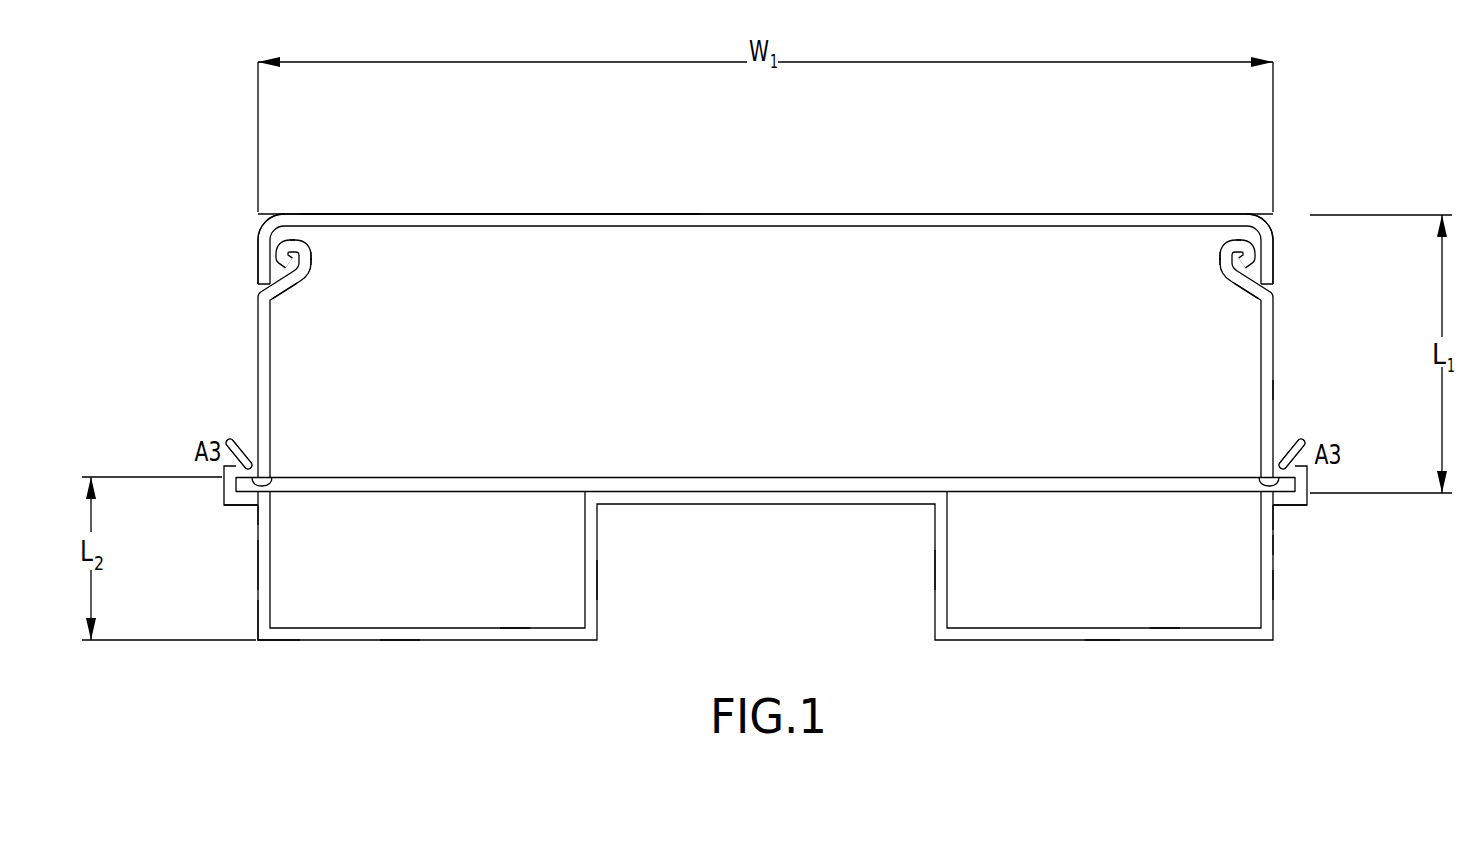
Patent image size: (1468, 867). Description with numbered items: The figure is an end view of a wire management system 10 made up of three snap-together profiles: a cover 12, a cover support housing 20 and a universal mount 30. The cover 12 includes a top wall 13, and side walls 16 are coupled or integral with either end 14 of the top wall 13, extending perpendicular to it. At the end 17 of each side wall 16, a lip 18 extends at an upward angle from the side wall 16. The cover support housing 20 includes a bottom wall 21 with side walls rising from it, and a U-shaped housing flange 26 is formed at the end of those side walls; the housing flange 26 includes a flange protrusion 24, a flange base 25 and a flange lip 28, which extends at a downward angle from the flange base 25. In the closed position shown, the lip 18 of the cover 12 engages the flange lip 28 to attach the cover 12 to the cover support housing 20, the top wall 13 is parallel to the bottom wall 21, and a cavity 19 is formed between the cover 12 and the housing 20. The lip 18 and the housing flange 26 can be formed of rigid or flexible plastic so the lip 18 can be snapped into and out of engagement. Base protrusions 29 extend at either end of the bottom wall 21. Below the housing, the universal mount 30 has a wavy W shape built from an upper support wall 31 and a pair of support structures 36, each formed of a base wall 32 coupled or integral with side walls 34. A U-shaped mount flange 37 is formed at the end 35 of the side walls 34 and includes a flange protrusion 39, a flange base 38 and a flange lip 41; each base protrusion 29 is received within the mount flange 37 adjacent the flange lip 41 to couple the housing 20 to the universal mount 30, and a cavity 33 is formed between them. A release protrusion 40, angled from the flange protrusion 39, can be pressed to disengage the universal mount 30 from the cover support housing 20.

The wire management system 10 is at (235, 134).
The cover 12 is at (475, 214).
The top wall 13 is at (708, 214).
The end 14 is at (266, 222).
The side wall 16 is at (258, 247).
The end 17 is at (258, 270).
The lip 18 is at (259, 282).
The cavity 19 is at (1190, 388).
The cover support housing 20 is at (258, 328).
The bottom wall 21 is at (668, 478).
The flange protrusion 24 is at (288, 289).
The flange base 25 is at (312, 251).
The housing flange 26 is at (313, 271).
The flange lip 28 is at (291, 241).
The base protrusion 29 is at (236, 488).
The universal mount 30 is at (258, 631).
The upper support wall 31 is at (770, 504).
The base wall 32 is at (395, 640).
The cavity 33 is at (512, 600).
The side wall 34 is at (259, 575).
The end 35 is at (259, 515).
The support structure 36 is at (259, 553).
The mount flange 37 is at (244, 505).
The flange base 38 is at (224, 468).
The flange protrusion 39 is at (230, 440).
The release protrusion 40 is at (243, 438).
The flange lip 41 is at (268, 477).